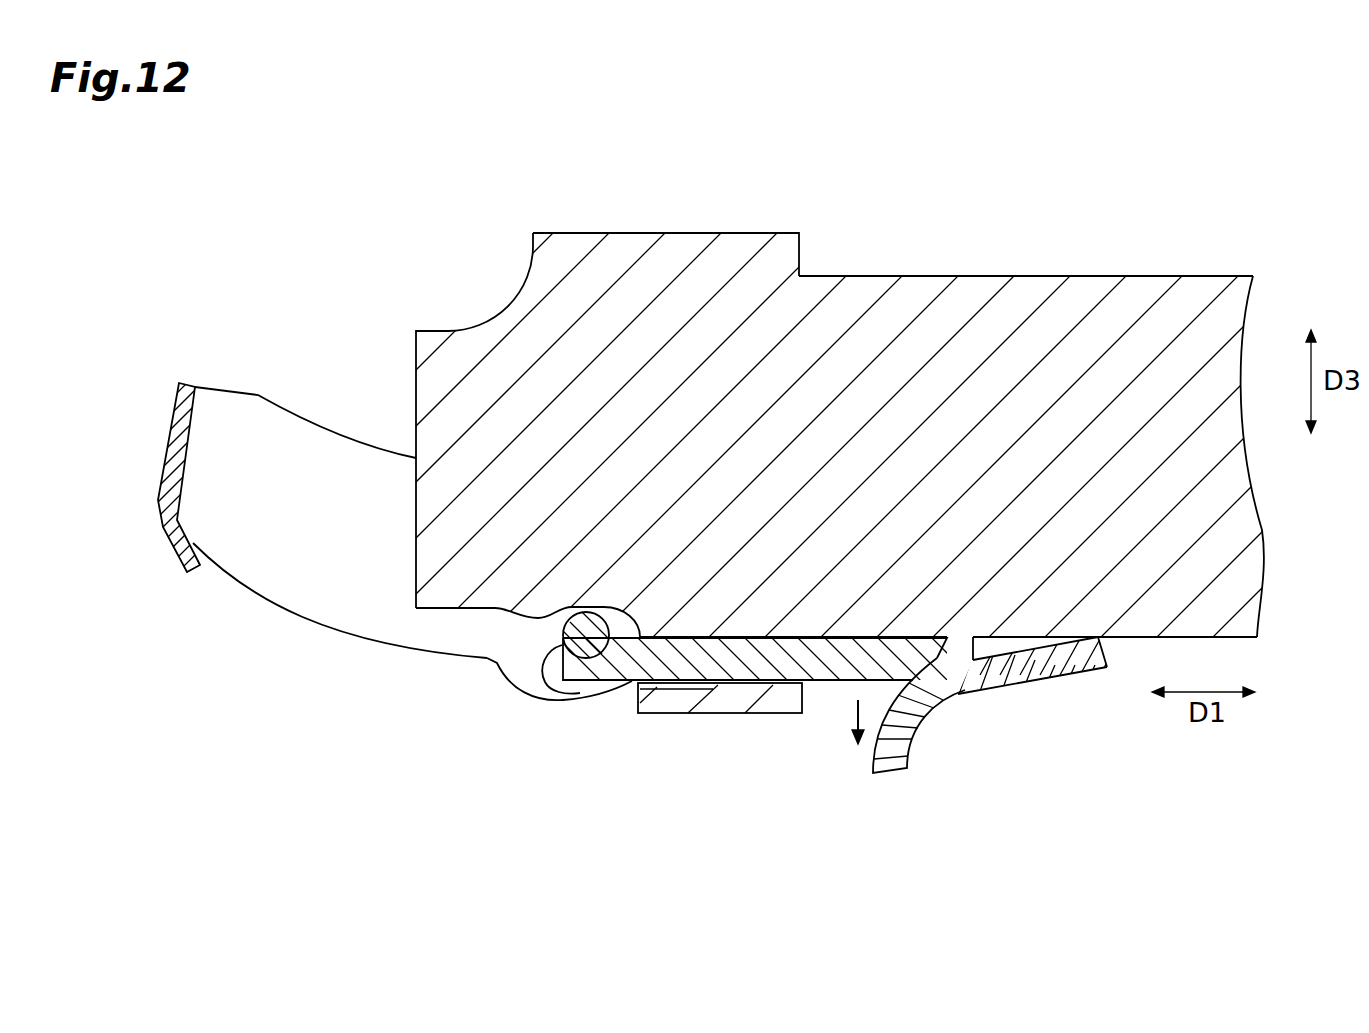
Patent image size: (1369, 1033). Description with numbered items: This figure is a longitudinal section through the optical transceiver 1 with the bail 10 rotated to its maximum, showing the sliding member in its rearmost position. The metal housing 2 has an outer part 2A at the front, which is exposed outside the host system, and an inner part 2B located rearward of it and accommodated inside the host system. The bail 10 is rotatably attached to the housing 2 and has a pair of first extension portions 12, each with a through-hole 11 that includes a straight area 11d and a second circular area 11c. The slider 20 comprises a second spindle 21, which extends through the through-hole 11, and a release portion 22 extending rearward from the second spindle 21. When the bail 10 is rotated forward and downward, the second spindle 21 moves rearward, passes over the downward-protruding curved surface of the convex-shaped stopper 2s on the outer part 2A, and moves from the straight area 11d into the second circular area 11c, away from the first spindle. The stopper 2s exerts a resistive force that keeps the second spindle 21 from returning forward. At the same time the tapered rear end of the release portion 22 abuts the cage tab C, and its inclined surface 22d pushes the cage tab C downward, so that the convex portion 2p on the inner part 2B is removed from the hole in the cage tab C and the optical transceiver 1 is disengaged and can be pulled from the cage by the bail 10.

The optical transceiver 1 is at (699, 412).
The housing 2 is at (699, 455).
The outer part 2A is at (690, 248).
The inner part 2B is at (1200, 300).
The stopper 2s is at (527, 612).
The convex portion 2p is at (962, 650).
The bail 10 is at (227, 386).
The through-hole 11 is at (554, 742).
The straight area 11d is at (540, 648).
The second circular area 11c is at (598, 642).
The first extension portion 12 is at (325, 603).
The slider 20 is at (727, 664).
The second spindle 21 is at (558, 652).
The release portion 22 is at (832, 695).
The inclined surface 22d is at (1009, 710).
The cage tab C is at (900, 728).